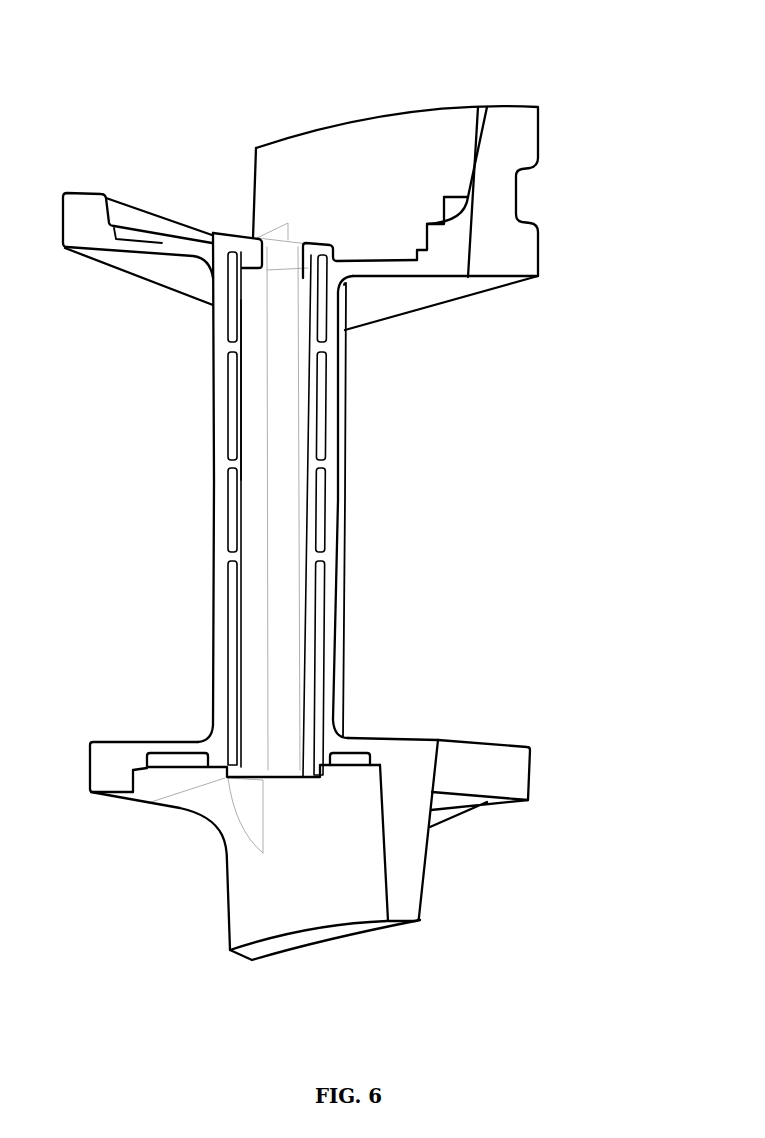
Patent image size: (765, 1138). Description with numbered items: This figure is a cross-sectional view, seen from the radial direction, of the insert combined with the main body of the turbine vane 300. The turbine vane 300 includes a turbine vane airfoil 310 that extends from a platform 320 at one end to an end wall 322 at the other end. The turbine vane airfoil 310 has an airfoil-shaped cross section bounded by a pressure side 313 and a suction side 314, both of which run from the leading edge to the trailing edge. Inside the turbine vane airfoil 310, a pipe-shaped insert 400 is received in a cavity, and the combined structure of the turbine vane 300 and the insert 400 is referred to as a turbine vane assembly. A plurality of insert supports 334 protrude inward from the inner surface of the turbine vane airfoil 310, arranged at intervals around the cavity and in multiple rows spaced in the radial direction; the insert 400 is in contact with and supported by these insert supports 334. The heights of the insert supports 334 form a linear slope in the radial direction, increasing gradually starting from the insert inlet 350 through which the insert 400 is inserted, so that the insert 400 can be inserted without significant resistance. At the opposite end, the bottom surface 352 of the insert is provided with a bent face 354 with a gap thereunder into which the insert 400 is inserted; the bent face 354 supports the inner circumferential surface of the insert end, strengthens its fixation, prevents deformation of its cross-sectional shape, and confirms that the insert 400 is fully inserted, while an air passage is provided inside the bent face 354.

The turbine vane 300 is at (346, 510).
The turbine vane airfoil 310 is at (360, 541).
The pressure side 313 is at (217, 598).
The suction side 314 is at (338, 628).
The platform 320 is at (411, 156).
The end wall 322 is at (328, 907).
The insert supports 334 is at (233, 462).
The insert inlet 350 is at (230, 777).
The bottom surface of the insert 352 is at (233, 247).
The bent face 354 is at (255, 262).
The insert 400 is at (240, 405).